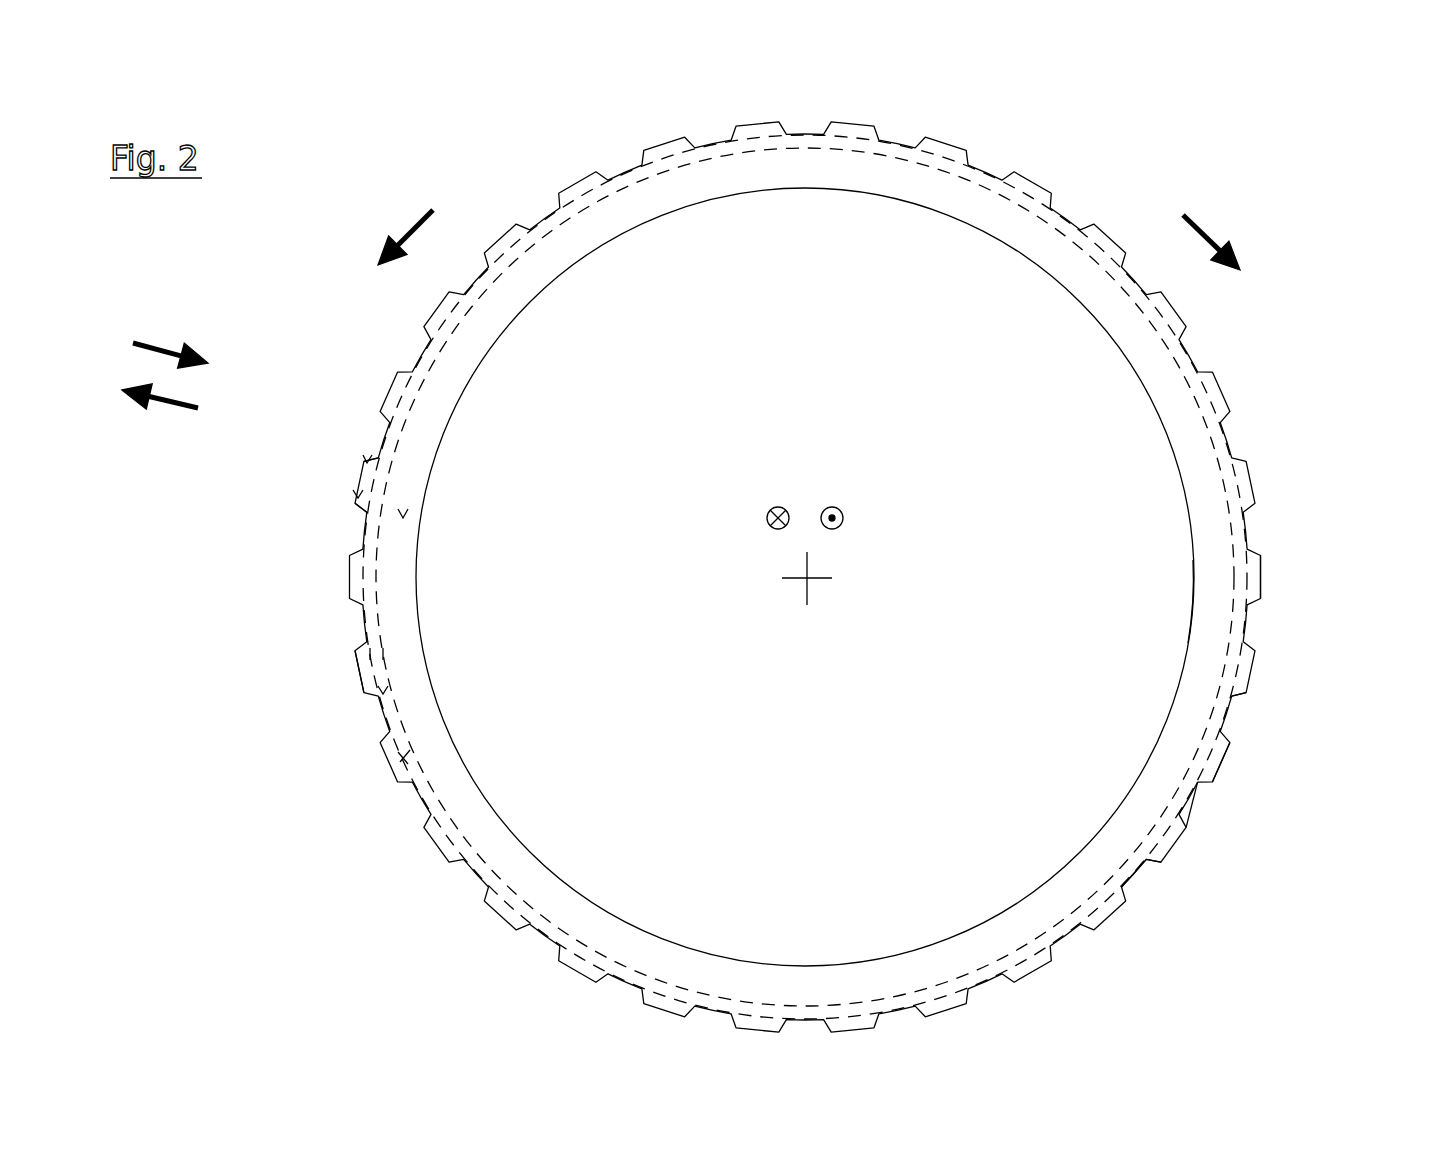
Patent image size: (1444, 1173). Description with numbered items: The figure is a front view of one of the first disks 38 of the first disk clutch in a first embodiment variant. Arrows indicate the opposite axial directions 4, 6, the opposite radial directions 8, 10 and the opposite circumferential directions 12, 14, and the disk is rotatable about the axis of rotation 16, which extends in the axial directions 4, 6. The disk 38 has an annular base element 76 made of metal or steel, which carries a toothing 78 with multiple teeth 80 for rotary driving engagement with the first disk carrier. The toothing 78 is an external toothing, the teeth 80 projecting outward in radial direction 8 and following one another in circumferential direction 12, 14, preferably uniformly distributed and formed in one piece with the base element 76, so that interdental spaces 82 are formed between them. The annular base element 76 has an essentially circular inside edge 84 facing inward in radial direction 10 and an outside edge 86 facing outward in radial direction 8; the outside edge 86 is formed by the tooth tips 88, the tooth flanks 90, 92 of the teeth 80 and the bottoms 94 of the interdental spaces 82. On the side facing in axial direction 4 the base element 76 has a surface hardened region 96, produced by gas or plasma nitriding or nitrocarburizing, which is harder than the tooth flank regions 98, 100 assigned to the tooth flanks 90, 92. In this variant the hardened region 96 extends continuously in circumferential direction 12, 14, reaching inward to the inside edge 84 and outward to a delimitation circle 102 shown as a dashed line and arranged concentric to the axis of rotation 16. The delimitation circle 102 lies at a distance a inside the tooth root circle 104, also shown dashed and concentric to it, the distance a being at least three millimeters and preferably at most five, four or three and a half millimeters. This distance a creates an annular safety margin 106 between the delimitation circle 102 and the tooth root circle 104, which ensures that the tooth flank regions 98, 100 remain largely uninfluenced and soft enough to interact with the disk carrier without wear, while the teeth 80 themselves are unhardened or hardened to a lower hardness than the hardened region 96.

The axial direction 4 is at (843, 525).
The axial direction 6 is at (768, 523).
The radial direction 8 is at (170, 403).
The radial direction 10 is at (153, 343).
The circumferential direction 12 is at (1203, 225).
The circumferential direction 14 is at (415, 222).
The axis of rotation 16 is at (806, 580).
The first disk 38 is at (1332, 267).
The annular base element 76 is at (1187, 643).
The toothing 78 is at (1230, 403).
The tooth 80 is at (1170, 315).
The interdental space 82 is at (1252, 627).
The inside edge 84 is at (417, 595).
The outside edge 86 is at (1245, 527).
The tooth tip 88 is at (1223, 765).
The tooth flank 90 is at (1183, 818).
The tooth flank 92 is at (1153, 865).
The bottom of interdental space 94 is at (1128, 880).
The hardened region 96 is at (403, 517).
The tooth flank region 98 is at (358, 497).
The tooth flank region 100 is at (367, 462).
The delimitation circle 102 is at (383, 653).
The tooth root circle 104 is at (372, 677).
The safety margin 106 is at (383, 693).
The distance a is at (403, 760).